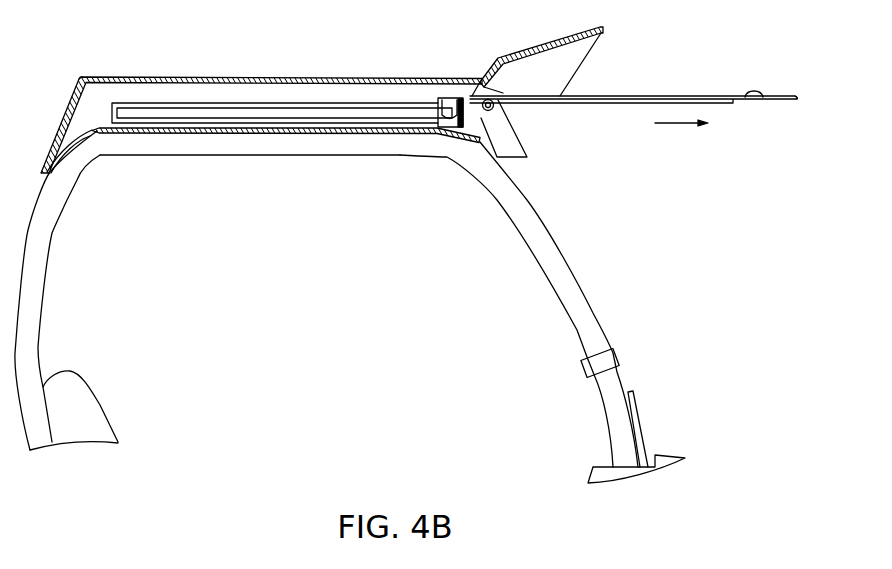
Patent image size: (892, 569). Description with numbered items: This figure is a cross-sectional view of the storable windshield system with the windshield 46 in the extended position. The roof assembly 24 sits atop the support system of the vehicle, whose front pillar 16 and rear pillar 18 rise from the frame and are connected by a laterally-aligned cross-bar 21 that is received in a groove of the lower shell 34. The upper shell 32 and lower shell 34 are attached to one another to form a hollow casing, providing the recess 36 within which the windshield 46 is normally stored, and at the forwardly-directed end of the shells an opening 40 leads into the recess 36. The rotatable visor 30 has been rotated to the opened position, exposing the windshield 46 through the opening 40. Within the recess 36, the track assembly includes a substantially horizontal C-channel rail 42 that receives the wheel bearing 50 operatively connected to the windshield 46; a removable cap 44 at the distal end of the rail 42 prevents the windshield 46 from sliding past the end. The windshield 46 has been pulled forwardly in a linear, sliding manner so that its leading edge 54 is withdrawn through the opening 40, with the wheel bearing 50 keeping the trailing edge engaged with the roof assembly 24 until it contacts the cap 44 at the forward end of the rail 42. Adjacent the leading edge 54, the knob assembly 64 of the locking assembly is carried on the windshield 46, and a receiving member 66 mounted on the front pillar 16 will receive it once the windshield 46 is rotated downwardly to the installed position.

The front pillar 16 is at (557, 273).
The rear pillar 18 is at (33, 290).
The cross-bar 21 is at (267, 145).
The roof assembly 24 is at (160, 76).
The visor 30 is at (542, 40).
The upper shell 32 is at (107, 76).
The lower shell 34 is at (90, 134).
The recess 36 is at (86, 110).
The opening 40 is at (521, 120).
The rail 42 is at (352, 126).
The cap 44 is at (462, 113).
The windshield 46 is at (744, 103).
The wheel bearing 50 is at (447, 111).
The leading edge 54 is at (796, 95).
The knob assembly 64 is at (753, 89).
The receiving member 66 is at (586, 366).